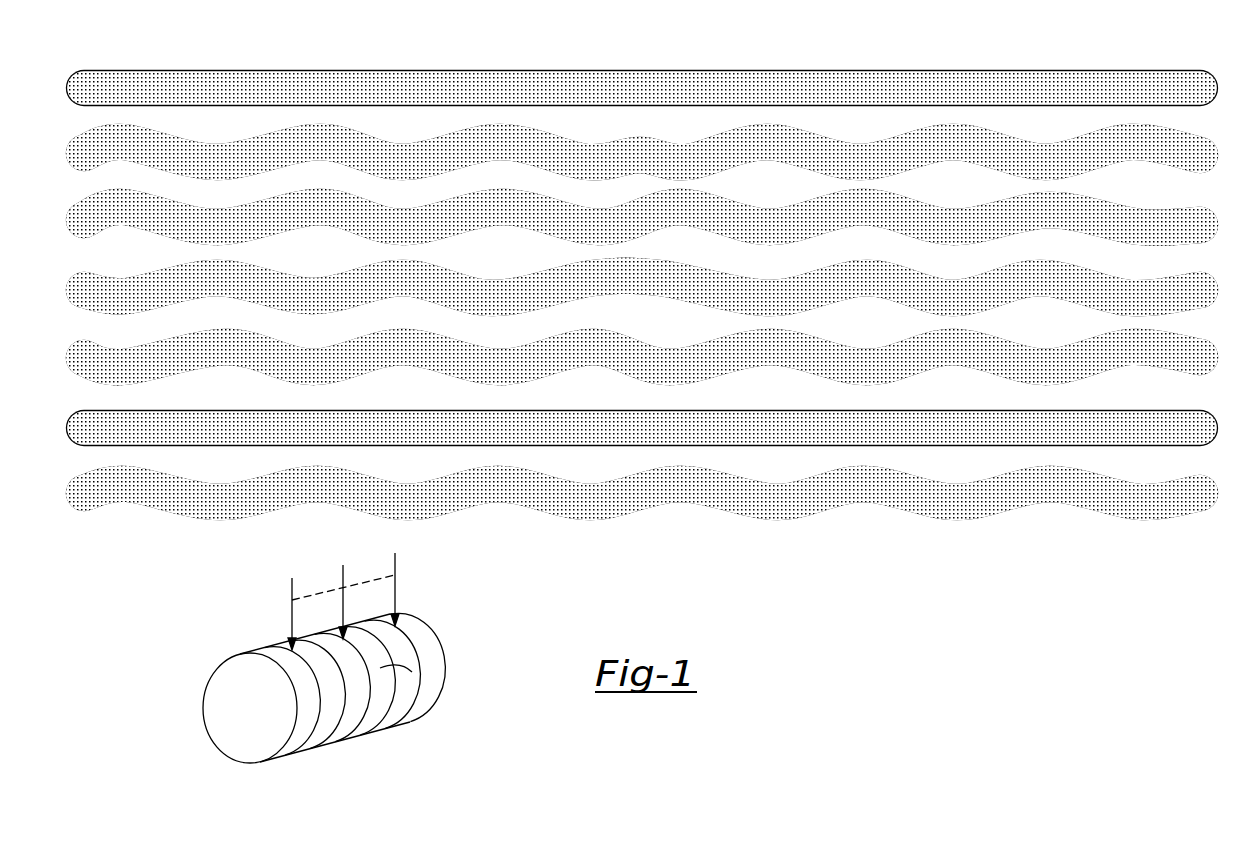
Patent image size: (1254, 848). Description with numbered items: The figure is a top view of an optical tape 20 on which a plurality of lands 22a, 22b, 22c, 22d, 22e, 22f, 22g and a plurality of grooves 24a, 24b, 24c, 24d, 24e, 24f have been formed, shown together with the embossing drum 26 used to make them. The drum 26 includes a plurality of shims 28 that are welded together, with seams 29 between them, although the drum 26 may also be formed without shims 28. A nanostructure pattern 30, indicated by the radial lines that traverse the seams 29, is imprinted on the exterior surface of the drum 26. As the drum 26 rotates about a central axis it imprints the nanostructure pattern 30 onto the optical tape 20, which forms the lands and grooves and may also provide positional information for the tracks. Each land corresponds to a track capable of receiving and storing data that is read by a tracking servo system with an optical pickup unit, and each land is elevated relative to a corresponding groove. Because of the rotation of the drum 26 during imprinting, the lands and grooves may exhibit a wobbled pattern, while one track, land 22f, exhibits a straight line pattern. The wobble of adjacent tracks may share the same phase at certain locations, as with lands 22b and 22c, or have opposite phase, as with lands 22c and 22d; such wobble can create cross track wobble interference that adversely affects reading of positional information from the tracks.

The optical tape 20 is at (868, 40).
The land 22a is at (728, 52).
The land 22b is at (840, 165).
The land 22c is at (755, 230).
The land 22d is at (483, 290).
The land 22e is at (838, 360).
The land 22f is at (755, 430).
The land 22g is at (755, 498).
The groove 24a is at (437, 122).
The groove 24b is at (188, 193).
The groove 24c is at (365, 243).
The groove 24d is at (270, 325).
The groove 24e is at (448, 393).
The groove 24f is at (222, 465).
The embossing drum 26 is at (468, 655).
The shim 28 is at (265, 653).
The seam 29 is at (230, 677).
The nanostructure pattern 30 is at (397, 663).